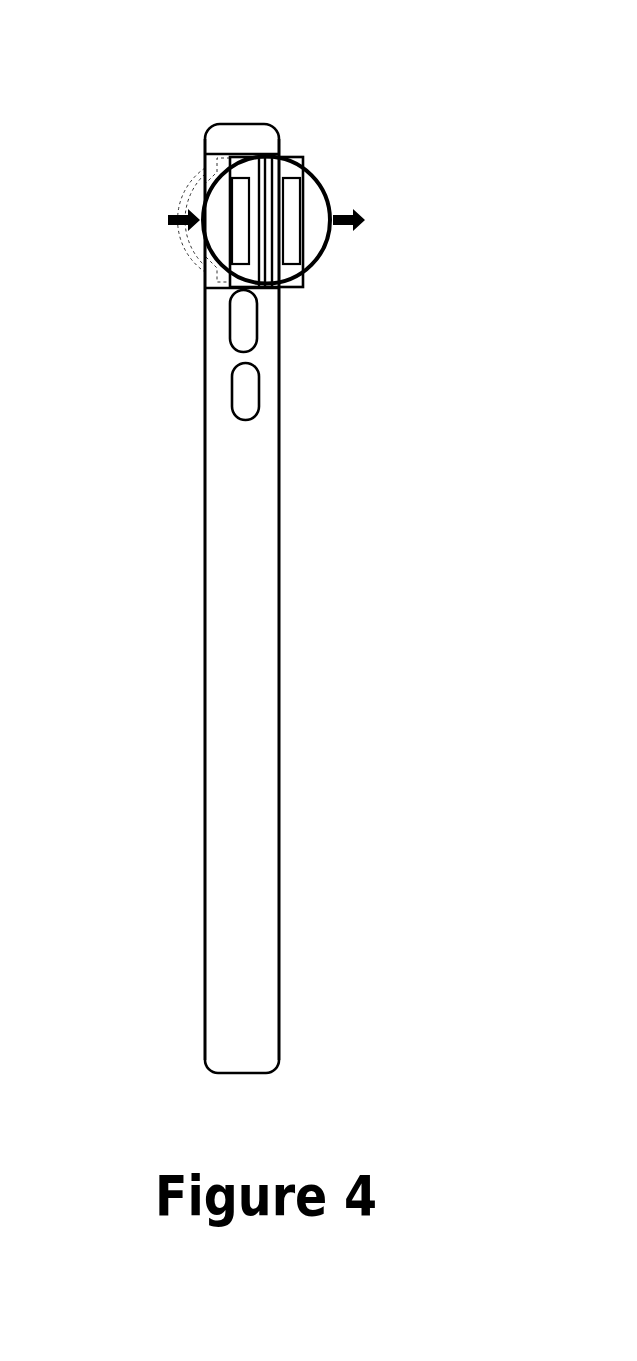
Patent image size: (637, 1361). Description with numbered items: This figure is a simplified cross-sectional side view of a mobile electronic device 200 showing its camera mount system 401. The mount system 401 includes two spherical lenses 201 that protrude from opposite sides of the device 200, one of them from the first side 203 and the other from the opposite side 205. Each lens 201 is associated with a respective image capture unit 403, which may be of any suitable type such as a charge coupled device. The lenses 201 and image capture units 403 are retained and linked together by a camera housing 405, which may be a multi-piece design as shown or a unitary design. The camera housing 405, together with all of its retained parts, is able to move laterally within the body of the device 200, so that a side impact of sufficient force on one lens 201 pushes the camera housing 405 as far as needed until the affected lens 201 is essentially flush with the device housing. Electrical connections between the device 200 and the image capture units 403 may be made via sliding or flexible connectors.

The mobile electronic device 200 is at (270, 126).
The spherical lens 201 is at (318, 182).
The first side 203 is at (200, 405).
The second side of body 205 is at (282, 408).
The mount system 401 is at (304, 143).
The image capture unit 403 is at (293, 218).
The camera housing 405 is at (297, 162).